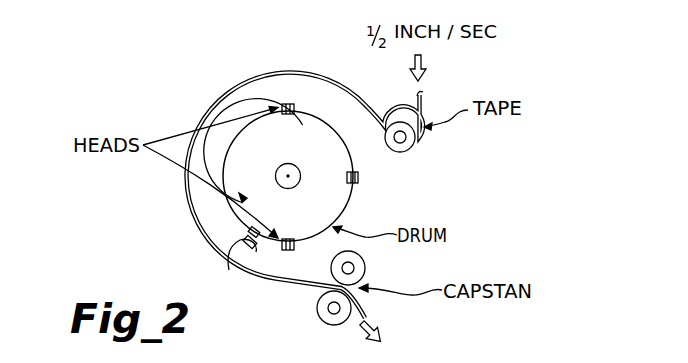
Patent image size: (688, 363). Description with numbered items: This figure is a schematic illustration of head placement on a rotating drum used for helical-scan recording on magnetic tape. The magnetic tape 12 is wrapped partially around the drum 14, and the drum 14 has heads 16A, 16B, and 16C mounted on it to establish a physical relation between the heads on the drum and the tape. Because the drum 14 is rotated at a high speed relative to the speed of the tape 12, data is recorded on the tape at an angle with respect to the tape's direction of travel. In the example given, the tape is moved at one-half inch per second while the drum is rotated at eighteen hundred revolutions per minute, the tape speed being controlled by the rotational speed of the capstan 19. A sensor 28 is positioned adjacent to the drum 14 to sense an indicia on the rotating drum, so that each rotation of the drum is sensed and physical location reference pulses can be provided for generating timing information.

The magnetic tape 12 is at (308, 72).
The drum 14 is at (349, 204).
The head 16A is at (284, 249).
The head 16B is at (360, 178).
The head 16C is at (287, 100).
The capstan 19 is at (365, 269).
The sensor 28 is at (228, 269).